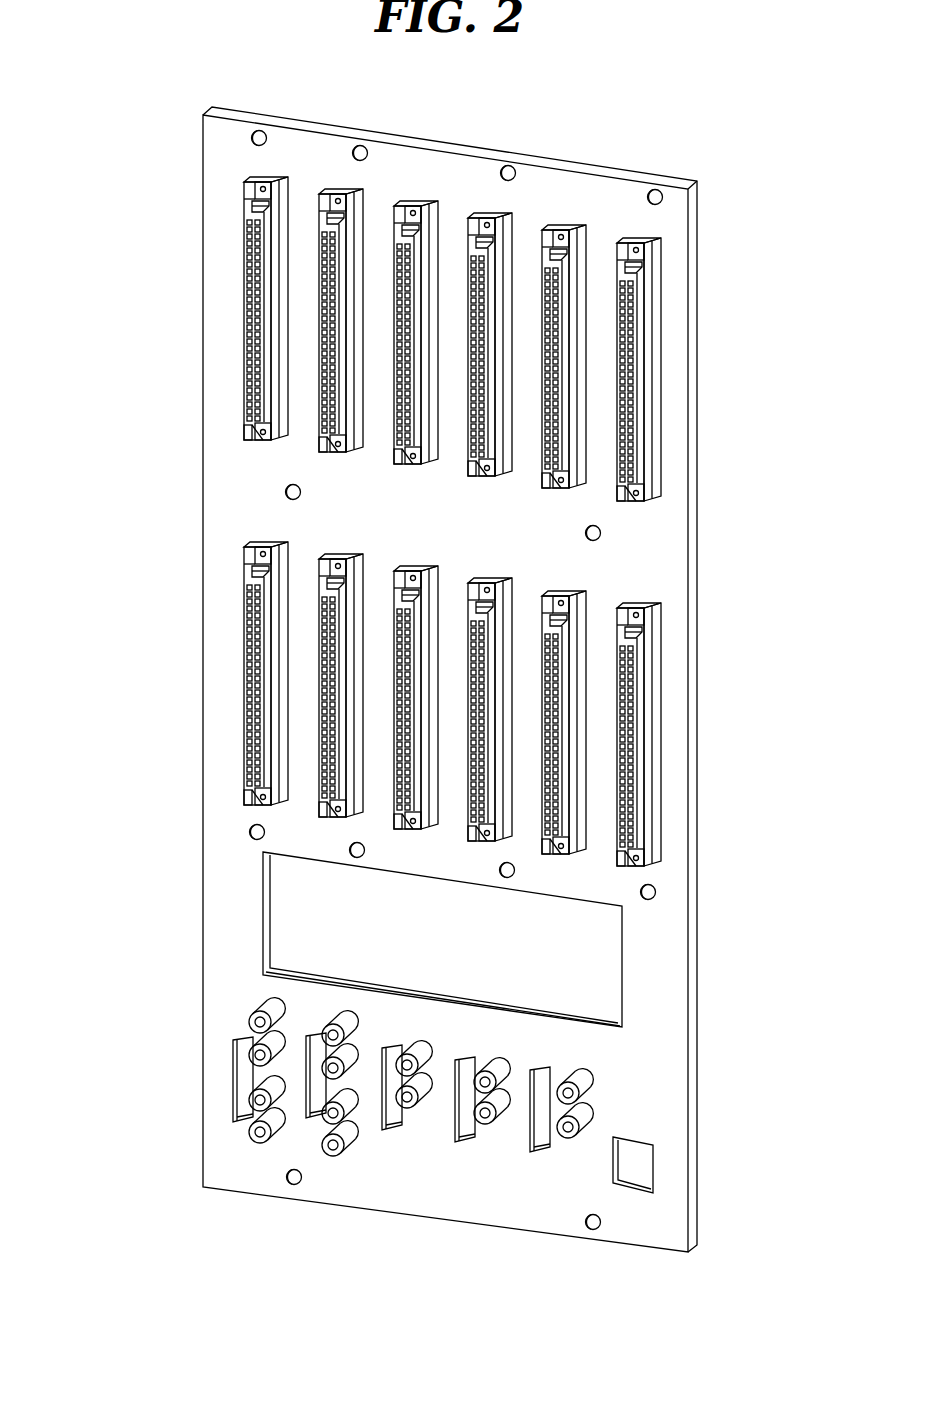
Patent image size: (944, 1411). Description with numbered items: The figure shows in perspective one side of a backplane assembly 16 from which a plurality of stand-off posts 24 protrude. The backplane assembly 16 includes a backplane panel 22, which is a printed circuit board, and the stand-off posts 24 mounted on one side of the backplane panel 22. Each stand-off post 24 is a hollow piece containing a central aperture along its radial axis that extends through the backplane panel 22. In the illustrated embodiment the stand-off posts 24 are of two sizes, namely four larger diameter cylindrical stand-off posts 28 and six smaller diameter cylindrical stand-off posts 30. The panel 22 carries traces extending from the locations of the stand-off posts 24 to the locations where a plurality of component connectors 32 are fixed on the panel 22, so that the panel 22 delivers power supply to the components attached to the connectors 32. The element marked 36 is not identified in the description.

The backplane assembly 16 is at (693, 302).
The backplane panel 22 is at (660, 570).
The component connectors 32 is at (248, 252).
The smaller diameter cylindrical stand-off posts 30 is at (260, 1148).
The larger diameter cylindrical stand-off posts 28 is at (483, 1127).
The stand-off posts 24 is at (597, 1085).
The coaxial connector 36 is at (570, 1127).